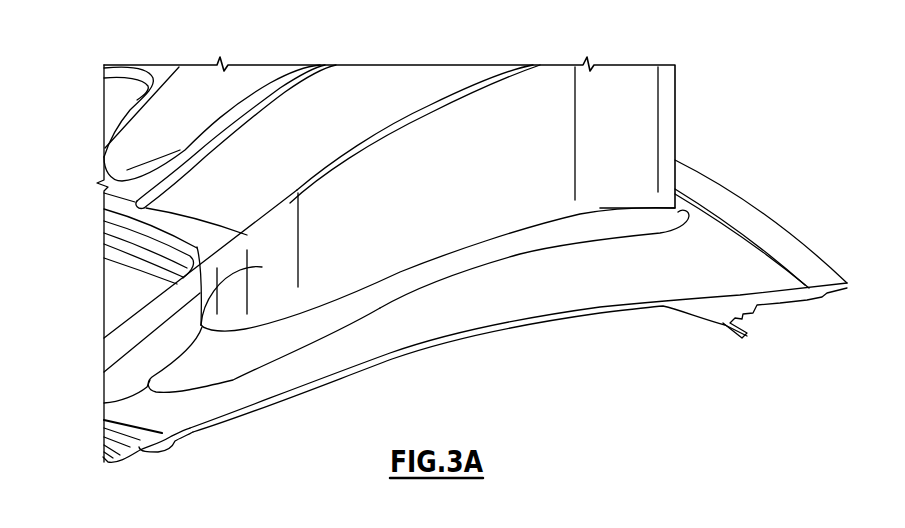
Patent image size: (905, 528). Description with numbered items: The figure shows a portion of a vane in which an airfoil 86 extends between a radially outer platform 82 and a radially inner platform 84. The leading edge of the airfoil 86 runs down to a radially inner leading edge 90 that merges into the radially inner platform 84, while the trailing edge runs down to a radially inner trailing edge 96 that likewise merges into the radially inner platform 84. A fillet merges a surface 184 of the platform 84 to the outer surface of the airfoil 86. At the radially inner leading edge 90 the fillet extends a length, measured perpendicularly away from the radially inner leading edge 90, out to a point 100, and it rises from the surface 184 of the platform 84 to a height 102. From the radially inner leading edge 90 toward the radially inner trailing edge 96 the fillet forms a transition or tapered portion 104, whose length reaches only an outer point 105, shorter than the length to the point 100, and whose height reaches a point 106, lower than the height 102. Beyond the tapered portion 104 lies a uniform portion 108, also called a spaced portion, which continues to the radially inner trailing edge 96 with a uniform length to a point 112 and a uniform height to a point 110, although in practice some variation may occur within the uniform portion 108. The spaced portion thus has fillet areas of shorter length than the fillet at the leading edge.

The radially outer platform 82 is at (272, 142).
The airfoil 86 is at (383, 193).
The radially inner leading edge 90 is at (252, 267).
The radially inner trailing edge 96 is at (675, 207).
The radially inner platform 84 is at (627, 283).
The point 100 is at (104, 403).
The height 102 is at (229, 330).
The tapered portion 104 is at (310, 316).
The outer point 105 is at (330, 330).
The point 106 is at (352, 300).
The surface of the platform 184 is at (350, 348).
The uniform portion 108 is at (489, 247).
The point 110 is at (470, 243).
The point 112 is at (523, 255).